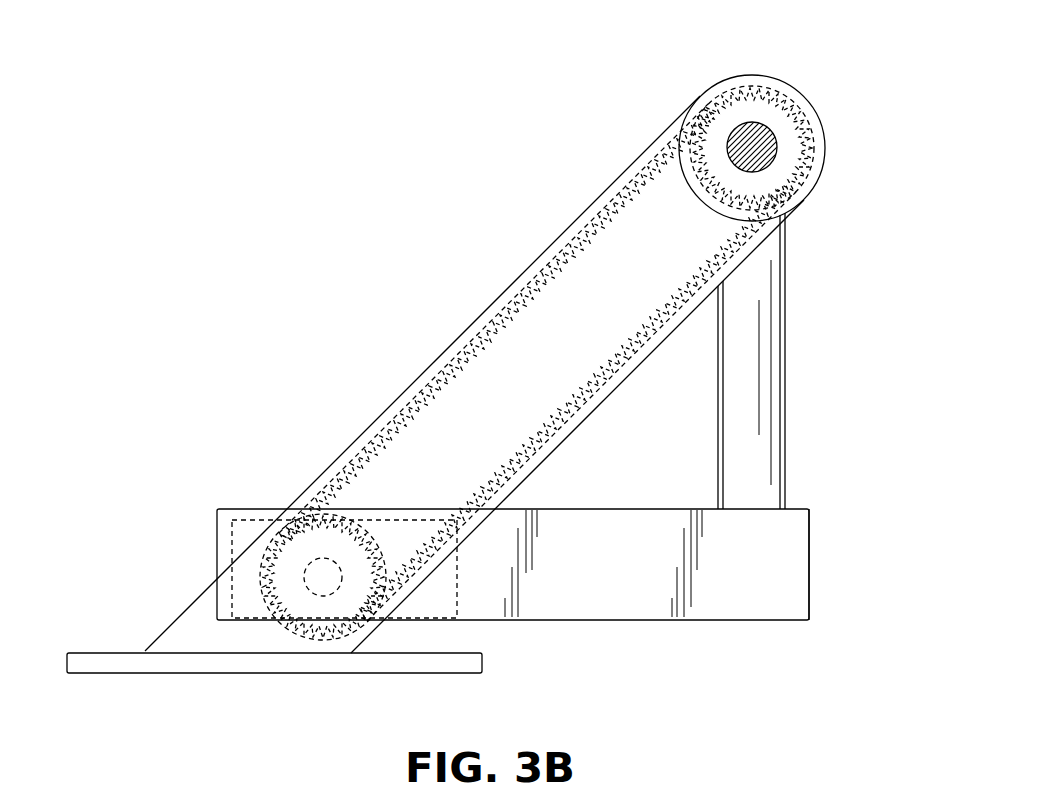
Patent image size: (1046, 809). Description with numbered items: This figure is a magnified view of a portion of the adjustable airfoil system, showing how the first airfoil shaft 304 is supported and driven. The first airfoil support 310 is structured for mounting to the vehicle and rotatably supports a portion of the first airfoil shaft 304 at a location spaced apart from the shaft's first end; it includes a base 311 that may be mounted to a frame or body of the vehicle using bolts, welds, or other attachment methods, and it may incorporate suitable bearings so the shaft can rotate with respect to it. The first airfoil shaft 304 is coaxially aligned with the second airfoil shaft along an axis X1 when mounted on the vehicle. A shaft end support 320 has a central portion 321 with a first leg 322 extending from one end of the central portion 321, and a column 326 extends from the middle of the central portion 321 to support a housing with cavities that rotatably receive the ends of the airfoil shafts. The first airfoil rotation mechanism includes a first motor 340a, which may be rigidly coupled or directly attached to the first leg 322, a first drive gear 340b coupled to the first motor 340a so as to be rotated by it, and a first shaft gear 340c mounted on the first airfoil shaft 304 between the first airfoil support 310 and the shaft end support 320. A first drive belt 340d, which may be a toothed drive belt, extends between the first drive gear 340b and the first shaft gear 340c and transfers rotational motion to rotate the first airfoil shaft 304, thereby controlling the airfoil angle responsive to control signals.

The first airfoil support 310 is at (538, 260).
The first airfoil shaft 304 is at (763, 133).
The axis X1 is at (743, 127).
The first shaft gear 340c is at (653, 138).
The first drive belt 340d is at (406, 405).
The first drive gear 340b is at (287, 507).
The first motor 340a is at (217, 545).
The shaft end support 320 is at (813, 527).
The central portion 321 is at (812, 558).
The first leg 322 is at (625, 575).
The column 326 is at (748, 350).
The base 311 is at (482, 660).